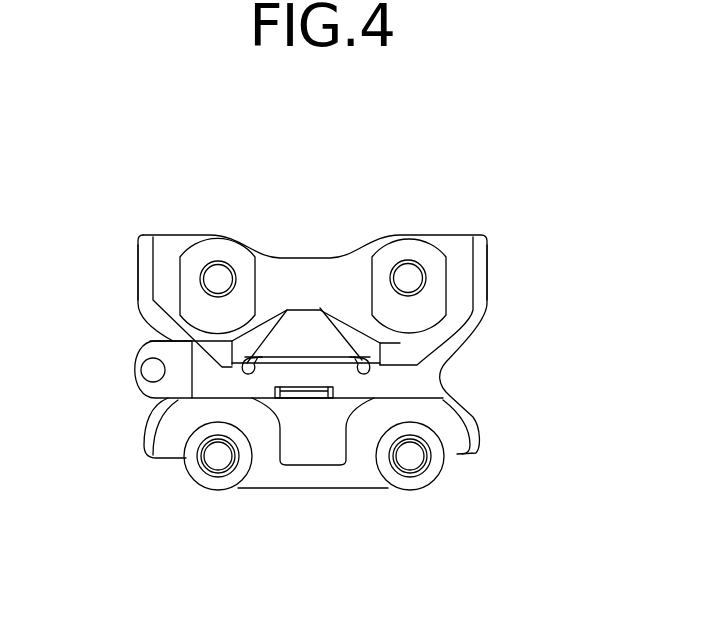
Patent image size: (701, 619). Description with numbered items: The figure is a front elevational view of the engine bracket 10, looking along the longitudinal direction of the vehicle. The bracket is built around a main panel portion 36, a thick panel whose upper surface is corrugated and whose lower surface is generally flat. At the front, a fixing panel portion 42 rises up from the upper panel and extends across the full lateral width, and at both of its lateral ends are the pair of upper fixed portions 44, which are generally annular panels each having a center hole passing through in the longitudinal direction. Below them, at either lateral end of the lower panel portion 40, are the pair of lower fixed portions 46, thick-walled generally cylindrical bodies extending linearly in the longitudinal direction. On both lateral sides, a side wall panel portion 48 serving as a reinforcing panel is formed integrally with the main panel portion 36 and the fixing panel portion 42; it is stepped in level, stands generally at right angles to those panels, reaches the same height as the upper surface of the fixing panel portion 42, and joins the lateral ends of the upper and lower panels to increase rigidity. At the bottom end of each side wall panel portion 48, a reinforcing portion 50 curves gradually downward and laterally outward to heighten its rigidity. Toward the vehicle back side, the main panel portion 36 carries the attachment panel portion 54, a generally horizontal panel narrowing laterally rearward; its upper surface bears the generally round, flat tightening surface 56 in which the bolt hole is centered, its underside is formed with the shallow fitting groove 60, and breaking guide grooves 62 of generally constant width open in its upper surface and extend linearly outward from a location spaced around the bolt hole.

The engine bracket 10 is at (513, 153).
The main panel portion 36 is at (397, 361).
The lower panel portion 40 is at (303, 443).
The fixing panel portion 42 is at (323, 268).
The upper fixed portion 44 is at (205, 258).
The lower fixed portion 46 is at (199, 485).
The side wall panel portion 48 is at (147, 266).
The reinforcing portion 50 is at (157, 413).
The attachment panel portion 54 is at (320, 352).
The tightening surface 56 is at (291, 340).
The fitting groove 60 is at (322, 398).
The breaking guide groove 62 is at (257, 380).